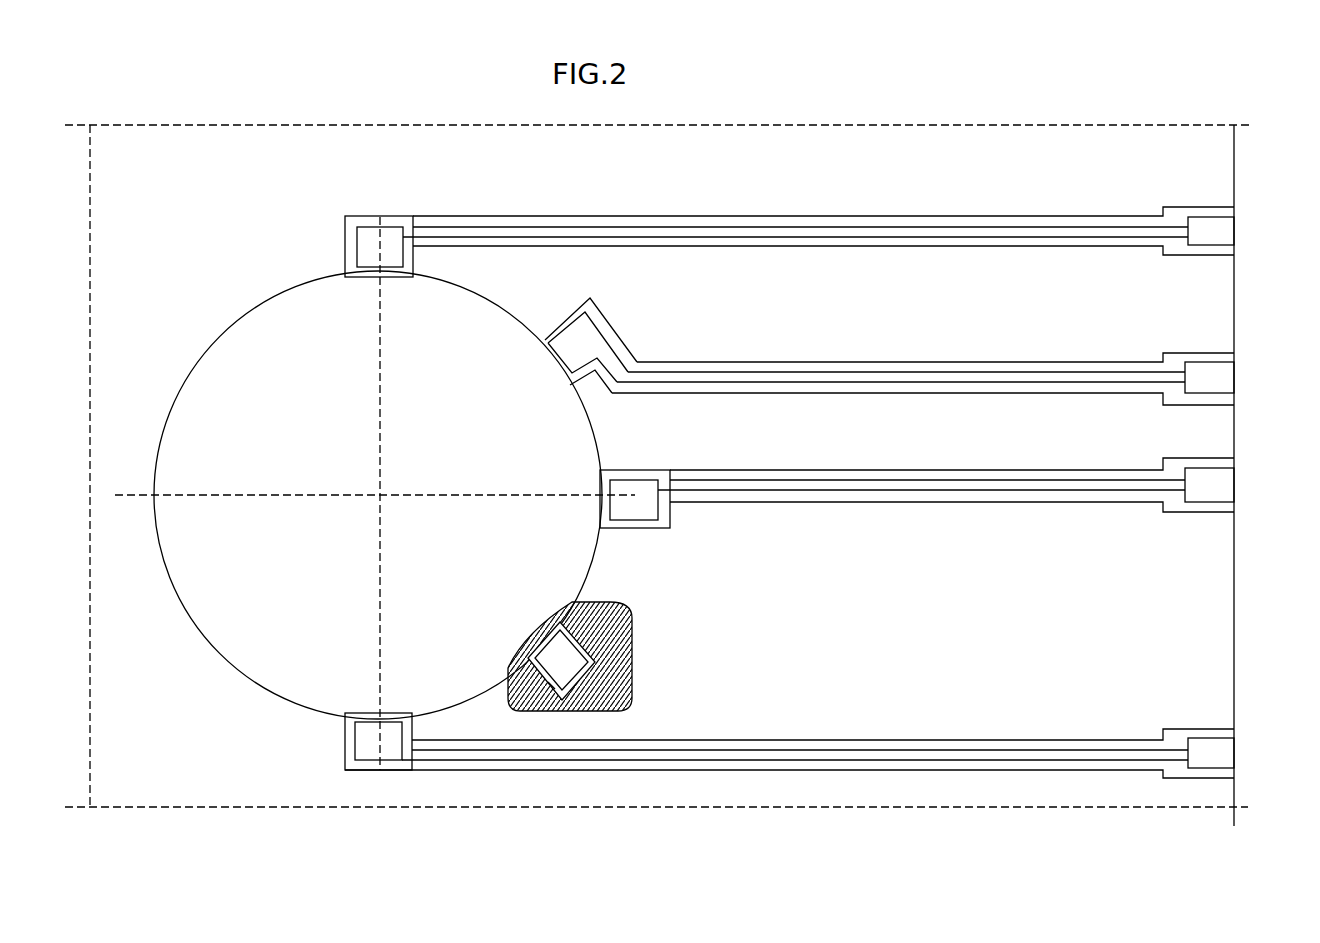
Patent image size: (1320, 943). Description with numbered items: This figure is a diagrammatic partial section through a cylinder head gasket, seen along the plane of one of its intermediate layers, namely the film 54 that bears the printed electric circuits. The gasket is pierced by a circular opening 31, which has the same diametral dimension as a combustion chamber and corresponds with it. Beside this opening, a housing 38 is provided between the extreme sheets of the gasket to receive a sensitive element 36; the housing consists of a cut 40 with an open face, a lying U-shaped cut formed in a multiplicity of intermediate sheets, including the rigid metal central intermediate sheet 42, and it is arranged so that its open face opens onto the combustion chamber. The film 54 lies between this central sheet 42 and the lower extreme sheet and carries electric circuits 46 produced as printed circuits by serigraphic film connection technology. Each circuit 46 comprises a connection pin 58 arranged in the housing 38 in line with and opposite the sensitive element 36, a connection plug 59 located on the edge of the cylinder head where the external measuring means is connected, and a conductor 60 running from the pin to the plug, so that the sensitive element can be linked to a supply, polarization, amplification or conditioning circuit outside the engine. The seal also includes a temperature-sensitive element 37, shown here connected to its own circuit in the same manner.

The circular opening 31 is at (306, 417).
The film 54 is at (172, 740).
The connection pin 58 is at (372, 247).
The temperature-sensitive element 37 is at (363, 742).
The conductor 60 is at (813, 233).
The electric circuit 46 is at (945, 254).
The connection plug 59 is at (1215, 488).
The central intermediate sheet 42 is at (618, 607).
The housing 38 is at (606, 657).
The sensitive element 36 is at (575, 662).
The cut 40 is at (548, 682).